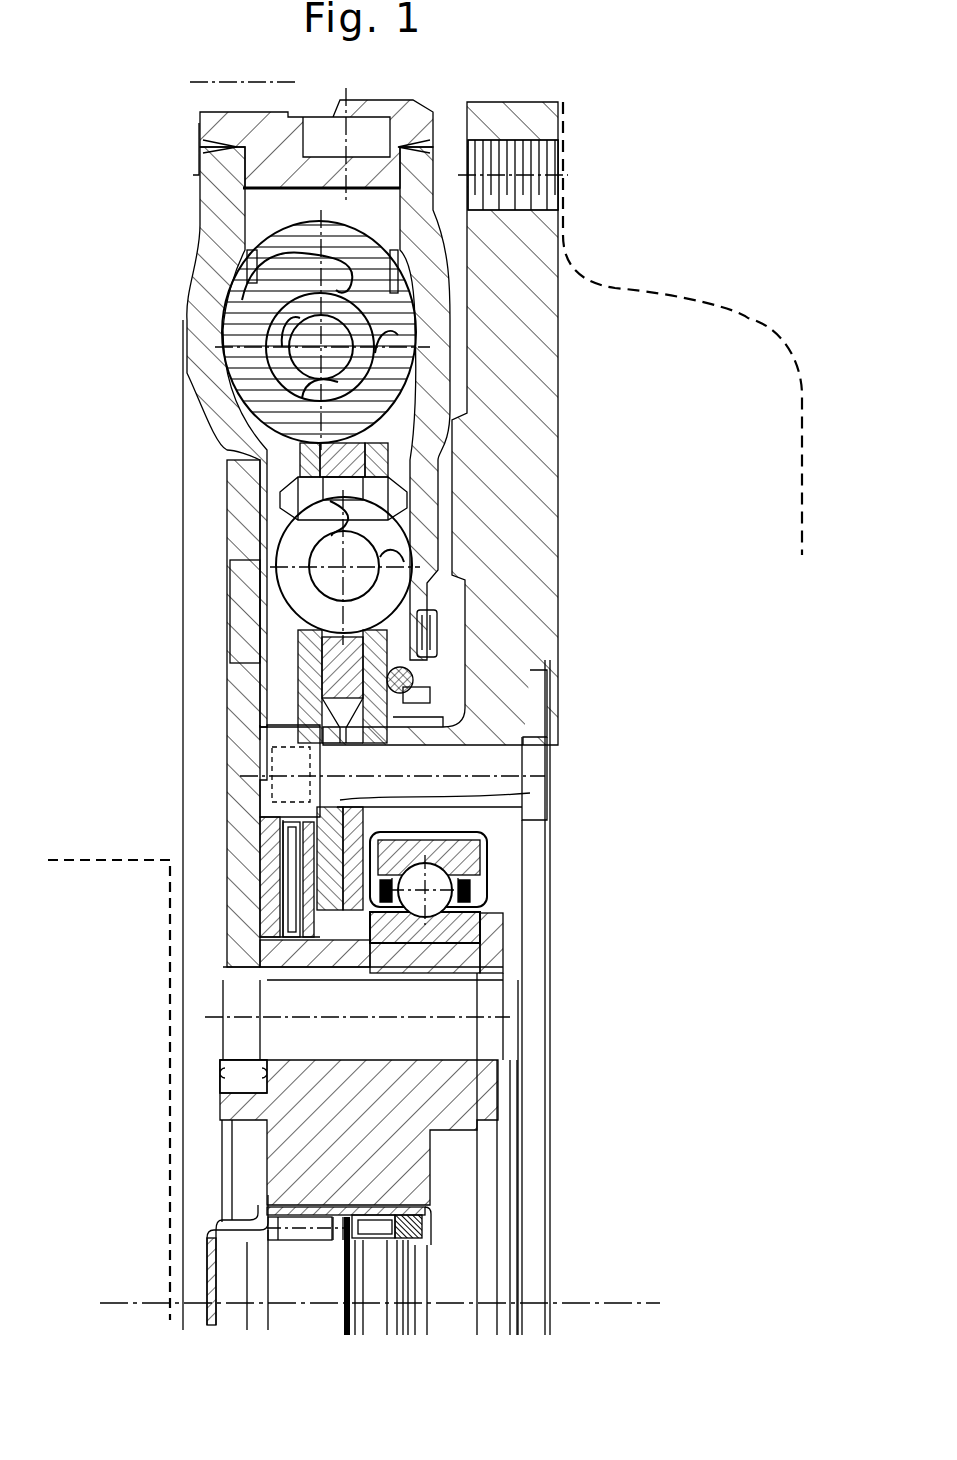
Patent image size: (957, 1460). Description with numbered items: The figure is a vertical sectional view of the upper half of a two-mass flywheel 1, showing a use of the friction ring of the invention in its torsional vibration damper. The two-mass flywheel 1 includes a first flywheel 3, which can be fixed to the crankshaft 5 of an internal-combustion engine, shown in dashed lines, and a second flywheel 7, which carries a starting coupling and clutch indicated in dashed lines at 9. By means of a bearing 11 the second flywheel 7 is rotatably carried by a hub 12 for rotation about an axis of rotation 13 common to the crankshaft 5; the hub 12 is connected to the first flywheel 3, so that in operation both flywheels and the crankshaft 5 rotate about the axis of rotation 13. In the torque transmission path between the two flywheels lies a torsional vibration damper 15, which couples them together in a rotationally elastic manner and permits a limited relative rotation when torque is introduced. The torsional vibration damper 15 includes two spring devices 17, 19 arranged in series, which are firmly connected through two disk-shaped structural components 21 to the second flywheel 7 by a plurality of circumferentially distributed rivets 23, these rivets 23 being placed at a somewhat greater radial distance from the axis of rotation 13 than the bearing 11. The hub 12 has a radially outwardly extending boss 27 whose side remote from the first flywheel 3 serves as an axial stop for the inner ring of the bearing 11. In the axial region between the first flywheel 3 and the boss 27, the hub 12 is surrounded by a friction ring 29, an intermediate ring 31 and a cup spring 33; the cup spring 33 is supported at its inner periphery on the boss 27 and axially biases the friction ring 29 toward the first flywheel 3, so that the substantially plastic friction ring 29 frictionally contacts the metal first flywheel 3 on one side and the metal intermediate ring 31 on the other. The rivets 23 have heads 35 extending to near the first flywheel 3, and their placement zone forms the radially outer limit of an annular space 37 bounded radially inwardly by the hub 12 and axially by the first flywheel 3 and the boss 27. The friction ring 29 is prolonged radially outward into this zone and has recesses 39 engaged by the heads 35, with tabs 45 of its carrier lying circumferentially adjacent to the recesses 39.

The two-mass flywheel 1 is at (676, 205).
The first flywheel 3 is at (245, 690).
The crankshaft 5 is at (74, 848).
The second flywheel 7 is at (535, 530).
The starting coupling and clutch 9 is at (766, 324).
The bearing 11 is at (470, 893).
The hub 12 is at (398, 1168).
The axis of rotation 13 is at (578, 1303).
The torsional vibration damper 15 is at (273, 530).
The spring device 17 is at (257, 310).
The spring device 19 is at (298, 596).
The disk-shaped structural components 21 is at (400, 992).
The rivets 23 is at (495, 760).
The boss 27 is at (330, 953).
The friction ring 29 is at (241, 906).
The intermediate ring 31 is at (262, 803).
The cup spring 33 is at (262, 883).
The heads 35 is at (262, 732).
The annular space 37 is at (530, 793).
The recesses 39 is at (262, 823).
The tabs 45 is at (252, 762).